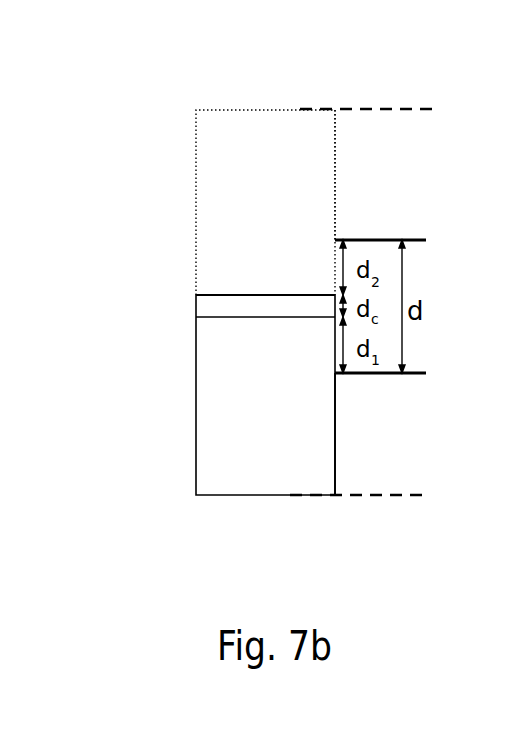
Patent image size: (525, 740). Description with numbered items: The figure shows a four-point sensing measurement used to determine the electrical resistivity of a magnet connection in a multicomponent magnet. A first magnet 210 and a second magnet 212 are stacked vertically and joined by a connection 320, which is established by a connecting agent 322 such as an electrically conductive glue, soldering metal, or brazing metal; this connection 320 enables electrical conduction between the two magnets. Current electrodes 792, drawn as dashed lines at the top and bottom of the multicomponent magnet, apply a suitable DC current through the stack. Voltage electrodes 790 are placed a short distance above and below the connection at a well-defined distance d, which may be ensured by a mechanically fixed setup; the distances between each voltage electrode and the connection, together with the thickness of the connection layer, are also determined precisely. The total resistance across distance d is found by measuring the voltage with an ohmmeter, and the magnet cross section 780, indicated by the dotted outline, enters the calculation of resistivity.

The magnet cross section 780 is at (267, 108).
The current electrodes 792 is at (400, 109).
The second magnet 212 is at (335, 150).
The voltage electrodes 790 is at (415, 241).
The connection 320 is at (189, 284).
The connecting agent 322 is at (196, 303).
The first magnet 210 is at (335, 469).